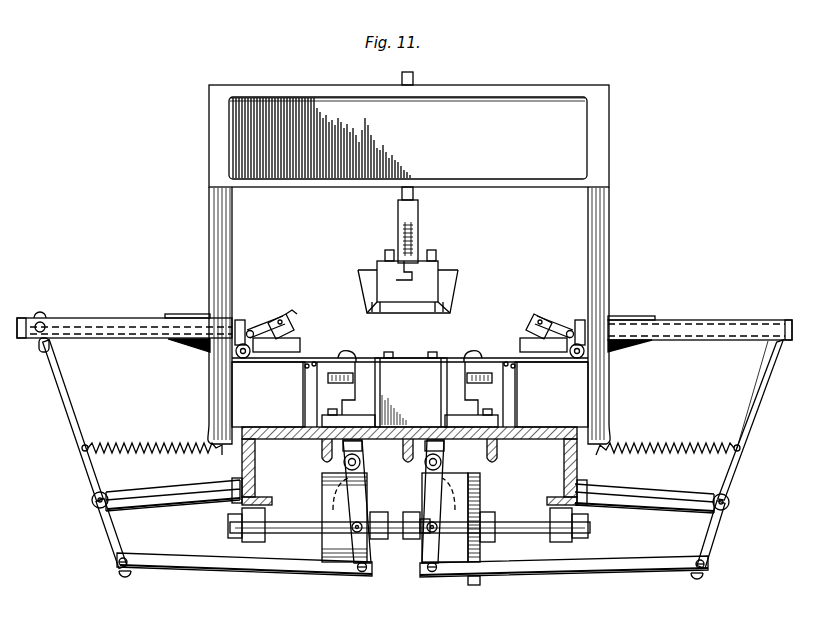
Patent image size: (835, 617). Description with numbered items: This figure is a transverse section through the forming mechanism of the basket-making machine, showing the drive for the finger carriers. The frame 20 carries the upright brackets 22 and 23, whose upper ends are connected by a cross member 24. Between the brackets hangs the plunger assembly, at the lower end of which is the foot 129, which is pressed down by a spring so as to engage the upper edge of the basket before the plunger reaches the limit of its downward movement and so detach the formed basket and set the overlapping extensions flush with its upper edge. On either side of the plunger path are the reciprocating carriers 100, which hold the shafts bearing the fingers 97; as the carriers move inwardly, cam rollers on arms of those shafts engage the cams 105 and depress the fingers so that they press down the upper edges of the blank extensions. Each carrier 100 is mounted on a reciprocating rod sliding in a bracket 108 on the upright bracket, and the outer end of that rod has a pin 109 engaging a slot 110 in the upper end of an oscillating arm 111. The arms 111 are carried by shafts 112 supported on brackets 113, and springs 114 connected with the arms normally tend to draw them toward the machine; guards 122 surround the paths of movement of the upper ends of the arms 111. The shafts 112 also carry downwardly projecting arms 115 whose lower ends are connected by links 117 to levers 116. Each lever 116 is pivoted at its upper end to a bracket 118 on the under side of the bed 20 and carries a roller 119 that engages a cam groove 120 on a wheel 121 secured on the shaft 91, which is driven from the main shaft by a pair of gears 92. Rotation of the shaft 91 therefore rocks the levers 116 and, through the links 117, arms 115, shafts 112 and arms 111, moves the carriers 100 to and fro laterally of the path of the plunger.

The cross member 24 is at (409, 129).
The upright bracket 23 is at (215, 213).
The upright bracket 22 is at (610, 250).
The cam 105 is at (349, 353).
The foot 129 is at (408, 250).
The guard 122 is at (106, 325).
The pin 109 is at (40, 320).
The slot 110 is at (44, 352).
The bracket 108 is at (190, 314).
The reciprocating carrier 100 is at (245, 322).
The finger 97 is at (283, 320).
The oscillating arm 111 is at (78, 410).
The spring 114 is at (151, 448).
The shaft 112 is at (92, 500).
The bracket 113 is at (175, 500).
The downwardly projecting arm 115 is at (111, 538).
The link 117 is at (249, 563).
The frame 20 is at (272, 427).
The bracket 118 is at (424, 454).
The shaft 91 is at (512, 522).
The wheel 121 is at (322, 477).
The cam groove 120 is at (427, 480).
The roller 119 is at (421, 509).
The lever 116 is at (432, 560).
The gear 92 is at (475, 585).